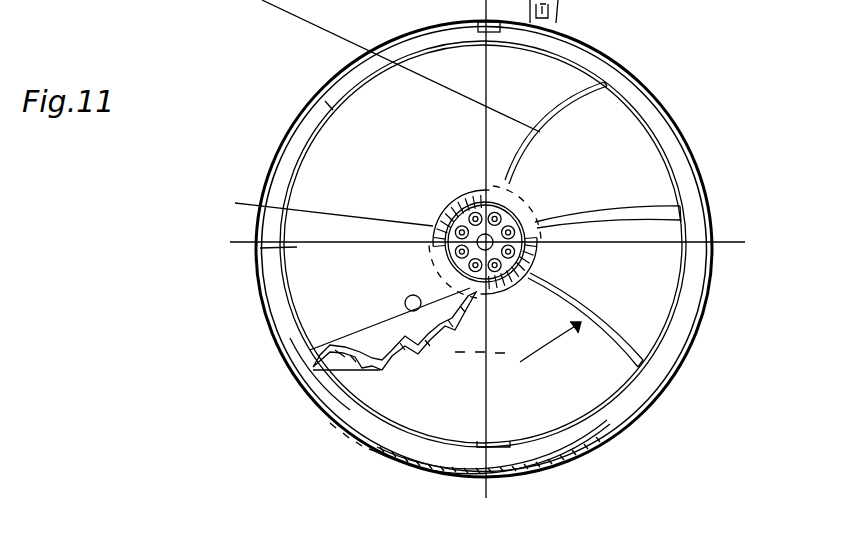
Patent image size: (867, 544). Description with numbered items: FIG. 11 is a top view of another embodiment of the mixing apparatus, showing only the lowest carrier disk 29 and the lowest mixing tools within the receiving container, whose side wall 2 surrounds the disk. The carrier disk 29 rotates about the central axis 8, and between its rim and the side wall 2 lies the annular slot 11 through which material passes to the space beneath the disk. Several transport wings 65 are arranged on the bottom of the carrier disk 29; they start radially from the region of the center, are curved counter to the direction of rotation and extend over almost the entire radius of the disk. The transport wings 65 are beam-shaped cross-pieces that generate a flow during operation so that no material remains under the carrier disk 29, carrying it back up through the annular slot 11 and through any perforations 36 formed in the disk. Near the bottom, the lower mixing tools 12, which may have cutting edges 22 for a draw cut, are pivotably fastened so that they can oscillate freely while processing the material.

The side wall 2 is at (695, 162).
The central axis 8 is at (511, 280).
The annular slot 11 is at (698, 290).
The lower mixing tools 12 is at (392, 368).
The cutting edges 22 is at (385, 350).
The lowest carrier disk 29 is at (330, 167).
The perforations 36 is at (330, 348).
The transport wings 65 is at (603, 213).